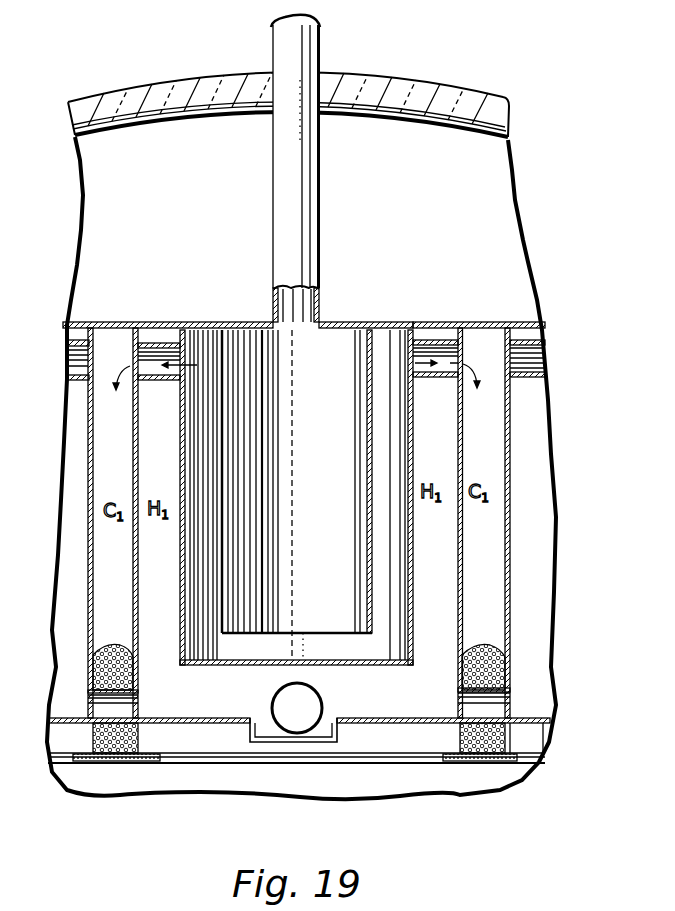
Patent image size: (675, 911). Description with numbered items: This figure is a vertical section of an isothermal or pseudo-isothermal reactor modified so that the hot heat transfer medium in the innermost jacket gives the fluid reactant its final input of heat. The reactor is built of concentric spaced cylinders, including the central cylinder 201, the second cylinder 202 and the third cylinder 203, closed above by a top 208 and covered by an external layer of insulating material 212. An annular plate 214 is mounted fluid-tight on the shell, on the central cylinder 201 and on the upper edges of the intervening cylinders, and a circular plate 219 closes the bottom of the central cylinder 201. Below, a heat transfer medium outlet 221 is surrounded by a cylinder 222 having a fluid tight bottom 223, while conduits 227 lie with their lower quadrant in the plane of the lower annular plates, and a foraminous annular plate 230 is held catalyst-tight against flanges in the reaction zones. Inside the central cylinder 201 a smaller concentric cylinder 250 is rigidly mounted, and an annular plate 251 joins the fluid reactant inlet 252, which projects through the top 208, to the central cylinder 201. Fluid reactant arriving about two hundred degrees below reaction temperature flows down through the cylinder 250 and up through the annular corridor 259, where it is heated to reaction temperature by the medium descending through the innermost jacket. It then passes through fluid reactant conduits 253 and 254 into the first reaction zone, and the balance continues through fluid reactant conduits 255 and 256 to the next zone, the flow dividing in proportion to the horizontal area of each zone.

The central cylinder 201 is at (412, 556).
The second cylinder 202 is at (455, 433).
The third cylinder 203 is at (508, 455).
The top 208 is at (482, 110).
The insulating material 212 is at (408, 88).
The annular plate 214 is at (495, 322).
The circular plate 219 is at (355, 664).
The heat transfer medium outlet 221 is at (275, 700).
The cylinder 222 is at (337, 738).
The fluid tight bottom 223 is at (278, 742).
The conduits 227 is at (100, 703).
The foraminous annular plate 230 is at (118, 758).
The cylinder 250 is at (318, 513).
The annular plate 251 is at (383, 322).
The fluid reactant inlet 252 is at (319, 202).
The fluid reactant conduit 253 is at (150, 343).
The fluid reactant conduit 254 is at (430, 342).
The fluid reactant conduit 255 is at (68, 381).
The fluid reactant conduit 256 is at (527, 375).
The annular corridor 259 is at (390, 597).